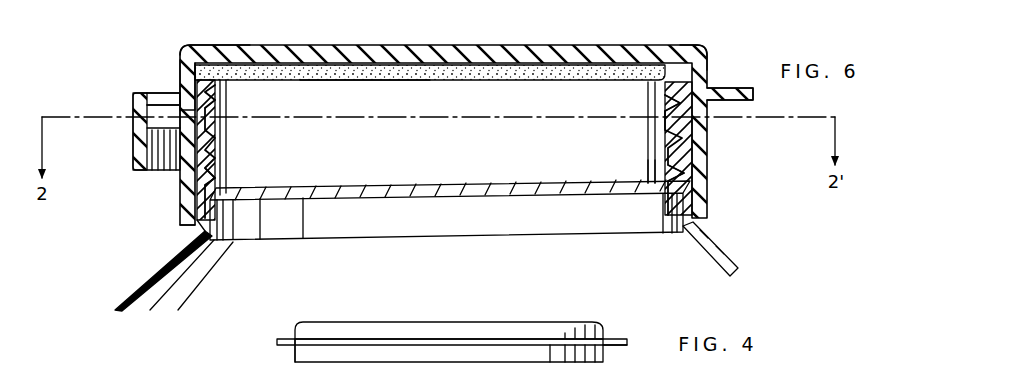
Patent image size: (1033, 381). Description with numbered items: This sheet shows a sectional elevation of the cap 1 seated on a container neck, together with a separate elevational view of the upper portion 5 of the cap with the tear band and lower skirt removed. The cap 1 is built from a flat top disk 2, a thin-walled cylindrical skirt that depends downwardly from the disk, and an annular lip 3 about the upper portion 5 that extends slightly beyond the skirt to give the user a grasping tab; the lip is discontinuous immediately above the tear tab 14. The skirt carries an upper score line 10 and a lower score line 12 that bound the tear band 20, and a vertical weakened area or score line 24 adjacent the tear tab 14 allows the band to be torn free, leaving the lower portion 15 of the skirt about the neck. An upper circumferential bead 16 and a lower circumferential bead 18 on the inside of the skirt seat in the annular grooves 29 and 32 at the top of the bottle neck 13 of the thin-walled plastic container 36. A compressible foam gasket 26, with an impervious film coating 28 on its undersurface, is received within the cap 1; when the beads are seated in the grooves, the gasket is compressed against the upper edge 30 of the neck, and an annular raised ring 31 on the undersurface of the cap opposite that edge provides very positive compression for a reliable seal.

In FIG. 6, the cap 1 is at (172, 71).
In FIG. 6, the top disk 2 is at (333, 45).
In FIG. 4, the top disk 2 is at (592, 320).
In FIG. 6, the annular lip 3 is at (158, 98).
In FIG. 4, the annular lip 3 is at (471, 343).
In FIG. 4, the upper portion 5 is at (308, 333).
In FIG. 6, the upper score line 10 is at (703, 113).
In FIG. 6, the lower score line 12 is at (712, 163).
In FIG. 6, the bottle neck 13 is at (232, 212).
In FIG. 6, the tear tab 14 is at (136, 146).
In FIG. 6, the lower portion of skirt 15 is at (712, 208).
In FIG. 6, the upper circumferential bead 16 is at (207, 100).
In FIG. 6, the lower circumferential bead 18 is at (227, 178).
In FIG. 6, the tear band 20 is at (712, 142).
In FIG. 6, the weakened area or score line 24 is at (193, 27).
In FIG. 6, the compressible foam gasket 26 is at (507, 82).
In FIG. 6, the film coating 28 is at (365, 82).
In FIG. 6, the upper annular groove 29 is at (213, 147).
In FIG. 6, the upper edge of bottle neck 30 is at (706, 77).
In FIG. 6, the raised ring 31 is at (690, 48).
In FIG. 6, the lower annular groove 32 is at (682, 155).
In FIG. 4, the lower annular groove 32 is at (618, 363).
In FIG. 6, the thin-walled plastic container 36 is at (170, 268).